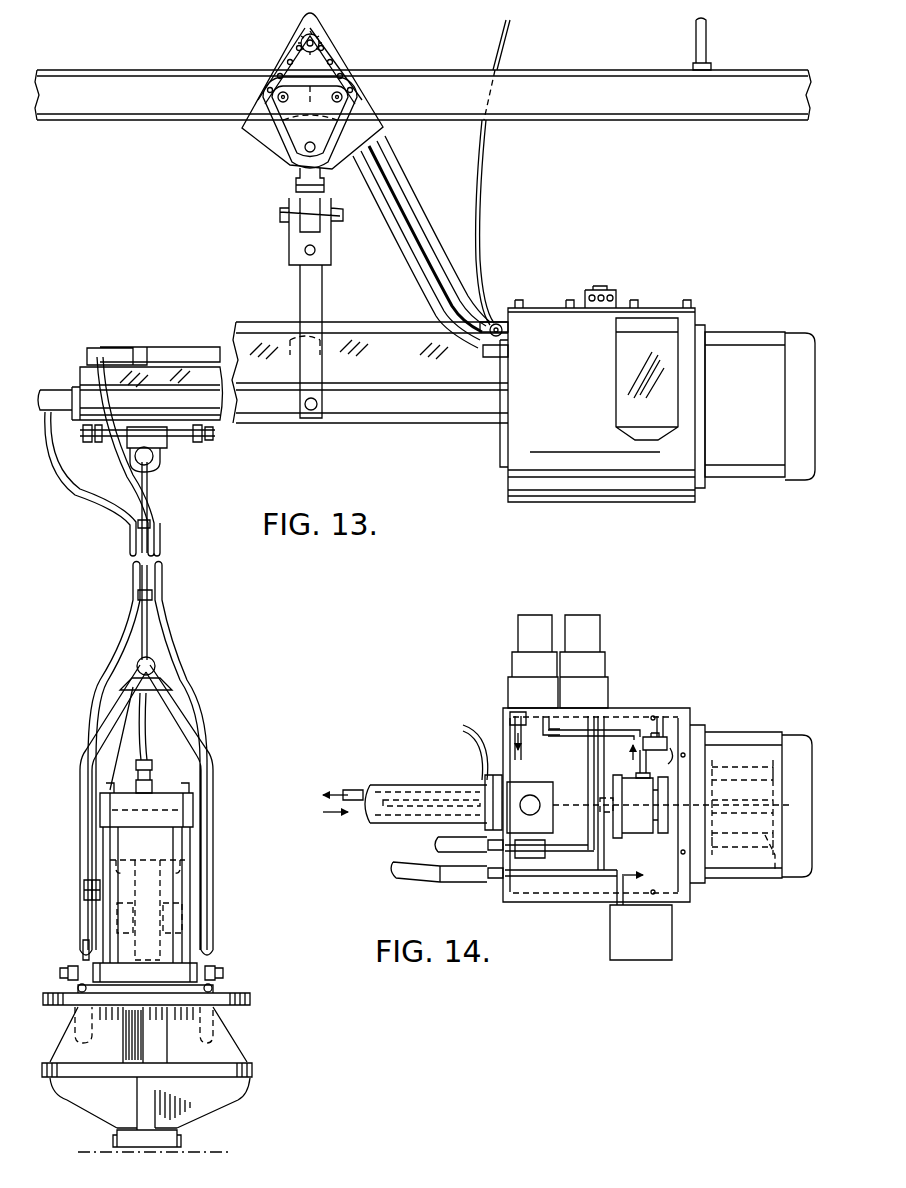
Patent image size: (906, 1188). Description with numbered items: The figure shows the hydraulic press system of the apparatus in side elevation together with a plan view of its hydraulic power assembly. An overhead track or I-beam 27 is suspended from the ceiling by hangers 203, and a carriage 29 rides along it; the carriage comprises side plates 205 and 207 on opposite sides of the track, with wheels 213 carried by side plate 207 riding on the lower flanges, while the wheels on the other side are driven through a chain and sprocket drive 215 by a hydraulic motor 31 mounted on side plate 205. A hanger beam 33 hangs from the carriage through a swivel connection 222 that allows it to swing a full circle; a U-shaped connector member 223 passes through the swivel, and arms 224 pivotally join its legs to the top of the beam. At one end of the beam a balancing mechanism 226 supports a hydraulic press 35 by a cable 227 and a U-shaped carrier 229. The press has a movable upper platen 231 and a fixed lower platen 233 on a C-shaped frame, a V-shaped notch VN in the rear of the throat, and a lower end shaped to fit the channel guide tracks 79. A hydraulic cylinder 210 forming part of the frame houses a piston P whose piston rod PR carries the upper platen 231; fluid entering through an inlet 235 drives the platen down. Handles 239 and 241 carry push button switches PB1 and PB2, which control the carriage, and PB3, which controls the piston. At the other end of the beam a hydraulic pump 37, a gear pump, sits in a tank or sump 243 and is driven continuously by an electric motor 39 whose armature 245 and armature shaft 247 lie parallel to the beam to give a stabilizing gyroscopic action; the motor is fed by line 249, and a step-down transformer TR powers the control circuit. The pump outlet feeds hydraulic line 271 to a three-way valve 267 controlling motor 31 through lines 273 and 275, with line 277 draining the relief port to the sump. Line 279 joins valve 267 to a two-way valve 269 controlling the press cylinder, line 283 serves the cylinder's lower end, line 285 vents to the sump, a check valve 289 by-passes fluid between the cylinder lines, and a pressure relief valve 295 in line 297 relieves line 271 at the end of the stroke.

In FIG. 13, the track or I-beam 27 is at (570, 86).
In FIG. 13, the hangers 203 is at (707, 33).
In FIG. 13, the side plate 205 is at (252, 128).
In FIG. 13, the chain and sprocket drive 215 is at (340, 40).
In FIG. 13, the hydraulic motor 31 is at (292, 50).
In FIG. 13, the wheels 213 is at (258, 94).
In FIG. 13, the side plate 207 is at (326, 140).
In FIG. 13, the carriage 29 is at (277, 135).
In FIG. 13, the swivel connection 222 is at (290, 230).
In FIG. 13, the U-shaped connector member 223 is at (303, 293).
In FIG. 13, the hanger beam 33 is at (390, 371).
In FIG. 14, the hanger beam 33 is at (398, 790).
In FIG. 13, the arms 224 is at (293, 353).
In FIG. 13, the balancing mechanism 226 is at (180, 440).
In FIG. 13, the cable 227 is at (148, 510).
In FIG. 13, the U-shaped carrier 229 is at (205, 748).
In FIG. 13, the inlet 235 is at (150, 775).
In FIG. 13, the hydraulic press 35 is at (197, 880).
In FIG. 13, the piston P is at (176, 860).
In FIG. 13, the piston rod PR is at (200, 906).
In FIG. 13, the hydraulic cylinder 210 is at (100, 848).
In FIG. 13, the push button switch PB1 is at (78, 955).
In FIG. 13, the push button switch PB2 is at (218, 988).
In FIG. 13, the push button switch PB3 is at (78, 987).
In FIG. 13, the movable upper platen 231 is at (252, 998).
In FIG. 13, the handle 239 is at (80, 1033).
In FIG. 13, the handle 241 is at (218, 1025).
In FIG. 13, the V-shaped notch VN is at (125, 1042).
In FIG. 13, the fixed lower platen 233 is at (252, 1070).
In FIG. 13, the channel guide tracks 79 is at (178, 1145).
In FIG. 13, the line 273 is at (398, 163).
In FIG. 14, the line 273 is at (602, 740).
In FIG. 13, the line 275 is at (398, 196).
In FIG. 14, the line 275 is at (590, 730).
In FIG. 13, the line 277 is at (415, 257).
In FIG. 14, the line 277 is at (420, 877).
In FIG. 13, the line 249 is at (482, 236).
In FIG. 14, the line 249 is at (465, 727).
In FIG. 13, the tank or sump 243 is at (520, 462).
In FIG. 14, the tank or sump 243 is at (572, 905).
In FIG. 13, the step-down transformer TR is at (625, 375).
In FIG. 14, the step-down transformer TR is at (672, 945).
In FIG. 13, the electric motor 39 is at (742, 465).
In FIG. 14, the electric motor 39 is at (760, 878).
In FIG. 14, the two-way valve 269 is at (512, 655).
In FIG. 14, the three-way valve 267 is at (607, 655).
In FIG. 14, the line 285 is at (510, 720).
In FIG. 14, the line 279 is at (558, 720).
In FIG. 14, the line 283 is at (553, 820).
In FIG. 14, the hydraulic line 271 is at (618, 733).
In FIG. 14, the pressure relief valve 295 is at (661, 735).
In FIG. 14, the line 297 is at (650, 738).
In FIG. 14, the check valve 289 is at (590, 753).
In FIG. 14, the hydraulic pump 37 is at (655, 832).
In FIG. 14, the armature shaft 247 is at (716, 808).
In FIG. 14, the rotor or armature 245 is at (765, 875).